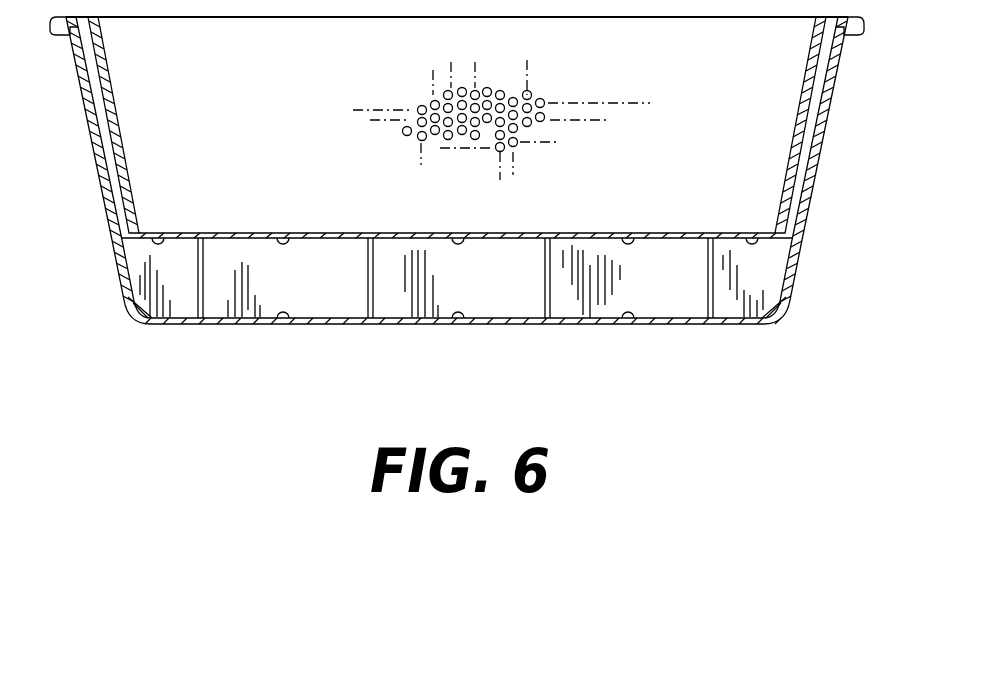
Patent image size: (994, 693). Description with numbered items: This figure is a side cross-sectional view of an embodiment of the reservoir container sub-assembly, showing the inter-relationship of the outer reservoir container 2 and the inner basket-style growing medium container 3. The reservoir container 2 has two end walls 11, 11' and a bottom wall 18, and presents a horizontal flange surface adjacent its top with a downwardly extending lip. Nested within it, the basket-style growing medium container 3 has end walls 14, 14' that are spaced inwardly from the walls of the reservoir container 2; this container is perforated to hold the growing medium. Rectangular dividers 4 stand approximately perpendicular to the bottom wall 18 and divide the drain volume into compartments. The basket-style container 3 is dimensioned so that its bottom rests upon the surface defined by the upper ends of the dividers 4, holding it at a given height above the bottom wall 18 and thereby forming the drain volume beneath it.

The reservoir container 2 is at (100, 163).
The basket-style growing medium container 3 is at (800, 138).
The divider 4 is at (708, 297).
The end wall 11 is at (172, 282).
The end wall 11' is at (746, 271).
The end wall 14 is at (91, 136).
The end wall 14' is at (772, 125).
The bottom wall 18 is at (228, 322).